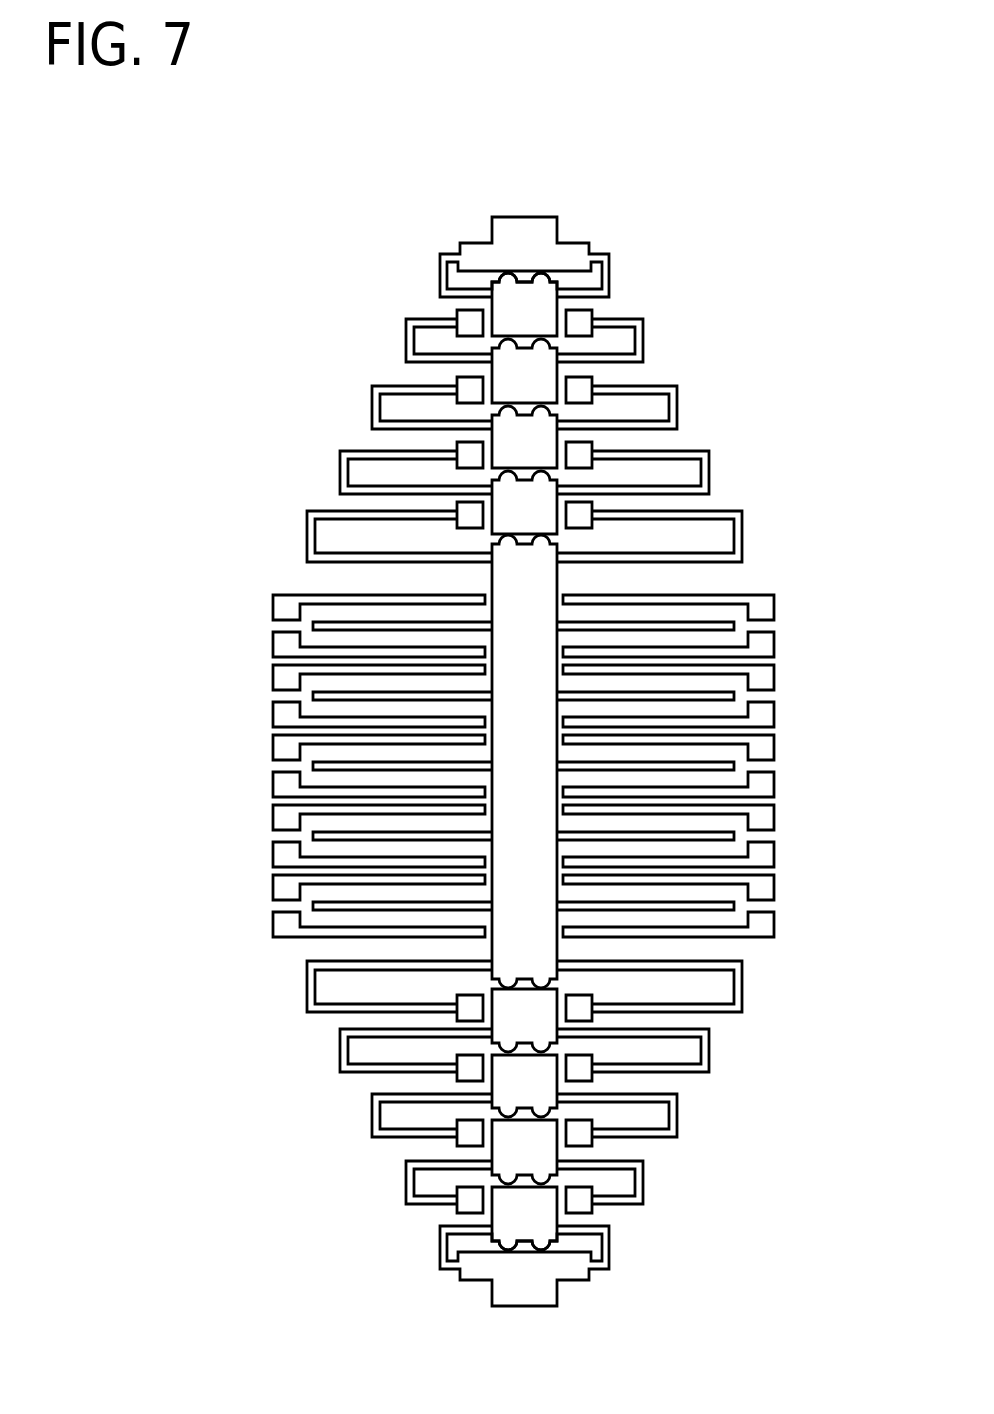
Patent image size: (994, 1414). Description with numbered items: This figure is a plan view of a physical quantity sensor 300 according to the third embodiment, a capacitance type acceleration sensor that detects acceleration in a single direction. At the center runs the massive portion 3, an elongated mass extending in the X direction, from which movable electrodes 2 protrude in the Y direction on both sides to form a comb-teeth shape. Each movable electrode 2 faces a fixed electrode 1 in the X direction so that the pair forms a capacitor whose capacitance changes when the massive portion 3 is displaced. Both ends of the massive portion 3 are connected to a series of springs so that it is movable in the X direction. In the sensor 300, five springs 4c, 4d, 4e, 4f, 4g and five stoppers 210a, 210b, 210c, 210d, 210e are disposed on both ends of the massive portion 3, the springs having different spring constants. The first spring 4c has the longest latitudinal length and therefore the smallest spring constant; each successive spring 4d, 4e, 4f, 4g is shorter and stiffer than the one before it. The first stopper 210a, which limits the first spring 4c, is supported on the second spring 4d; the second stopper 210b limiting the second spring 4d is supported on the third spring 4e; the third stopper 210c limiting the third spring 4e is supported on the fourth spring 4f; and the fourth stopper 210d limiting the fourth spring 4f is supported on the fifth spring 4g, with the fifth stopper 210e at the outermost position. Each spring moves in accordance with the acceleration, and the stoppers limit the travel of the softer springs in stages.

The physical quantity sensor 300 is at (525, 714).
The first stopper 210a is at (542, 512).
The second stopper 210b is at (542, 448).
The third stopper 210c is at (542, 383).
The fourth stopper 210d is at (542, 313).
The fifth stopper 210e is at (542, 258).
The first spring 4c is at (350, 556).
The second spring 4d is at (376, 488).
The third spring 4e is at (397, 421).
The fourth spring 4f is at (428, 357).
The fifth spring 4g is at (450, 291).
The fixed electrode 1 is at (340, 790).
The movable electrode 2 is at (346, 836).
The massive portion 3 is at (530, 790).